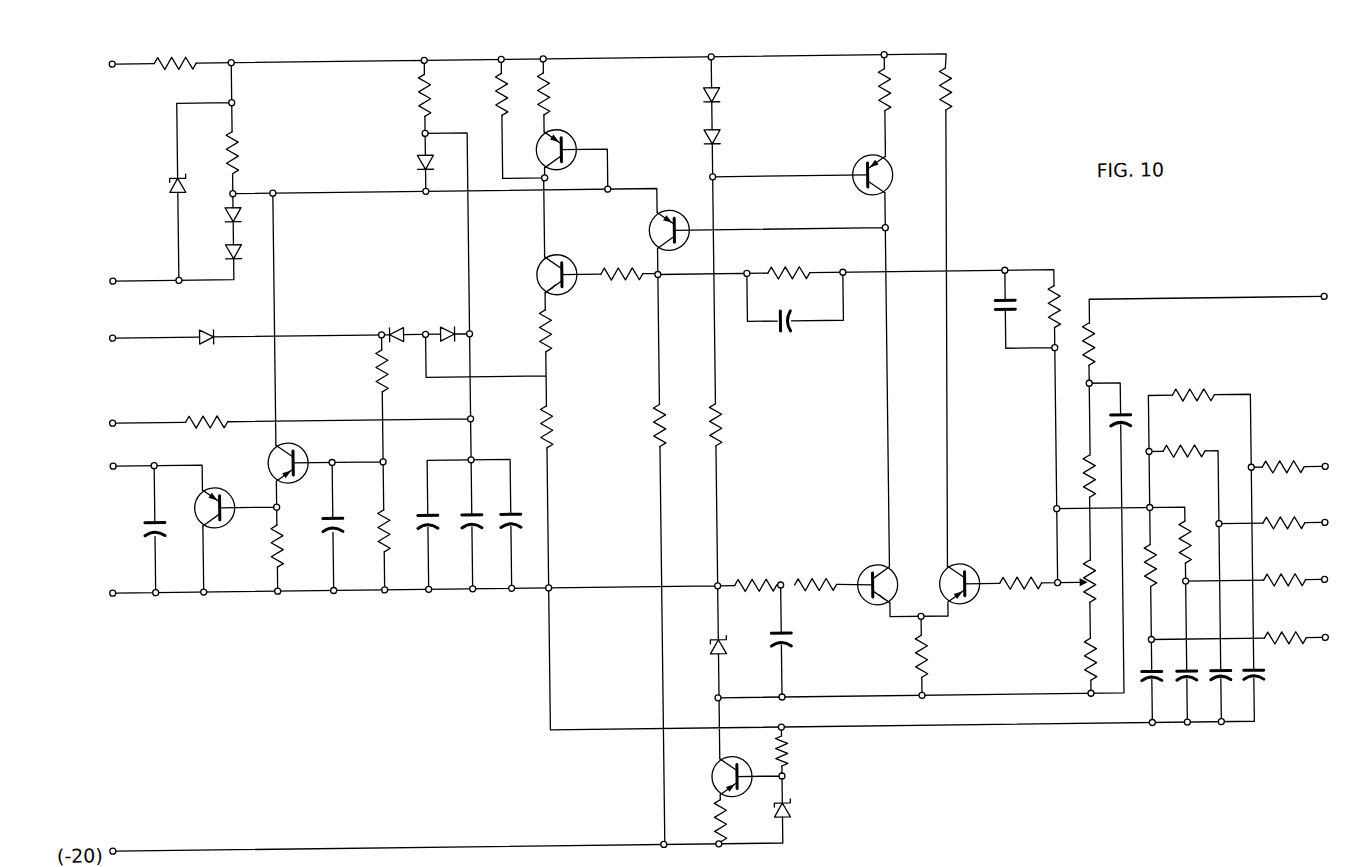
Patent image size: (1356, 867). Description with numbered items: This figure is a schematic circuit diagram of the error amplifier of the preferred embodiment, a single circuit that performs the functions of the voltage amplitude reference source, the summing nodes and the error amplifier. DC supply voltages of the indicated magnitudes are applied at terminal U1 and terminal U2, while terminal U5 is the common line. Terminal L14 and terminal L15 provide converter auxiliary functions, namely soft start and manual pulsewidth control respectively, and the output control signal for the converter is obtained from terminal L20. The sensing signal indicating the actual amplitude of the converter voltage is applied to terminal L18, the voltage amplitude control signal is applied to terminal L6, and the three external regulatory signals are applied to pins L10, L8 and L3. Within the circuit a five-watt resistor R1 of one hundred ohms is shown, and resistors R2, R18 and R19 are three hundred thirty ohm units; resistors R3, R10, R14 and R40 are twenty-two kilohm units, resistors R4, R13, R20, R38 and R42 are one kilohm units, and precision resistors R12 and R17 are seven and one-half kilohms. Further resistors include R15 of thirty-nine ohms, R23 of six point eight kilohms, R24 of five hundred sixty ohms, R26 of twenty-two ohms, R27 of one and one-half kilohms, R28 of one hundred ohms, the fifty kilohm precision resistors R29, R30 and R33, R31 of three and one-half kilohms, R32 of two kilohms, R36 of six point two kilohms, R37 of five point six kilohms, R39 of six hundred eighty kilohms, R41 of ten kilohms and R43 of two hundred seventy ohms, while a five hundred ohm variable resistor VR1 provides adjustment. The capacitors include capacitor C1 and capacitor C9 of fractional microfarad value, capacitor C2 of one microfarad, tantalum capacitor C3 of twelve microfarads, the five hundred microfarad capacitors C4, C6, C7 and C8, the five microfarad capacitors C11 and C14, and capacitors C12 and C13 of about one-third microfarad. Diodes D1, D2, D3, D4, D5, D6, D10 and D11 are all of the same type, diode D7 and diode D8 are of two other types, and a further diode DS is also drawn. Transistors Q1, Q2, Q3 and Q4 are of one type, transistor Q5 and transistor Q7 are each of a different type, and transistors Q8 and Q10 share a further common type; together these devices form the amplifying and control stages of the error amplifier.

The terminal U1 is at (97, 87).
The terminal U2 is at (84, 262).
The common line U5 is at (106, 599).
The terminal L15 is at (93, 338).
The terminal L14 is at (94, 421).
The terminal L20 is at (95, 467).
The terminal L18 is at (1324, 300).
The terminal L6 is at (1326, 471).
The pin L10 is at (1326, 528).
The pin L8 is at (1325, 585).
The pin L3 is at (1326, 643).
The resistor R1 is at (176, 52).
The resistor R2 is at (243, 150).
The resistor R3 is at (422, 86).
The resistor R4 is at (499, 86).
The resistor R10 is at (555, 420).
The resistor R12 is at (1098, 348).
The resistor R13 is at (270, 548).
The resistor R14 is at (378, 530).
The resistor R15 is at (204, 410).
The resistor R17 is at (1084, 462).
The resistor R18 is at (1014, 594).
The resistor R19 is at (798, 578).
The resistor R20 is at (736, 578).
The resistor R23 is at (928, 666).
The resistor R24 is at (1082, 670).
The resistor R26 is at (555, 336).
The resistor R27 is at (555, 90).
The resistor R28 is at (1276, 466).
The resistor R29 is at (1274, 524).
The resistor R30 is at (1272, 582).
The resistor R31 is at (1292, 638).
The resistor R32 is at (1196, 392).
The resistor R33 is at (1188, 448).
The resistor R36 is at (1063, 298).
The resistor R37 is at (956, 90).
The resistor R38 is at (882, 88).
The resistor R39 is at (790, 268).
The resistor R40 is at (723, 416).
The resistor R41 is at (652, 432).
The resistor R42 is at (784, 762).
The resistor R43 is at (742, 818).
The variable resistor VR1 is at (1084, 600).
The capacitor C1 is at (326, 534).
The capacitor C2 is at (170, 512).
The capacitor C3 is at (1136, 418).
The capacitor C4 is at (792, 644).
The capacitor C6 is at (420, 534).
The capacitor C7 is at (464, 534).
The capacitor C8 is at (504, 534).
The capacitor C9 is at (992, 312).
The capacitor C11 is at (1142, 686).
The capacitor C12 is at (1178, 686).
The capacitor C13 is at (1212, 680).
The capacitor C14 is at (1262, 682).
The diode D1 is at (228, 210).
The diode D2 is at (228, 246).
The diode D3 is at (414, 162).
The diode D4 is at (404, 320).
The diode D5 is at (208, 322).
The diode D6 is at (446, 322).
The diode D7 is at (172, 186).
The diode D8 is at (726, 650).
The diode D10 is at (722, 96).
The diode D11 is at (726, 132).
The zener diode DS is at (790, 814).
The transistor Q1 is at (870, 566).
The transistor Q2 is at (968, 568).
The transistor Q3 is at (574, 254).
The transistor Q4 is at (306, 450).
The transistor Q5 is at (232, 484).
The transistor Q7 is at (576, 138).
The transistor Q8 is at (896, 176).
The transistor Q10 is at (680, 210).